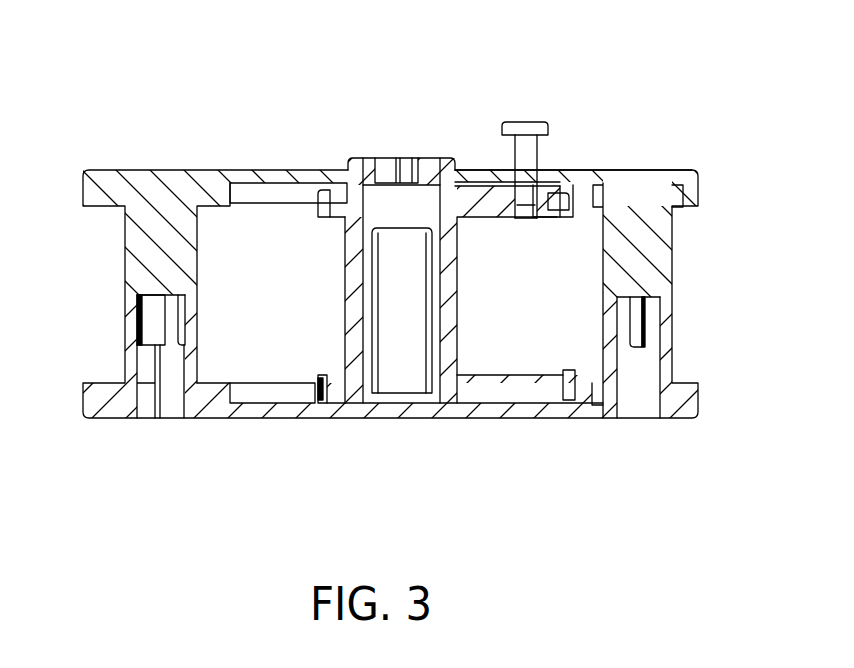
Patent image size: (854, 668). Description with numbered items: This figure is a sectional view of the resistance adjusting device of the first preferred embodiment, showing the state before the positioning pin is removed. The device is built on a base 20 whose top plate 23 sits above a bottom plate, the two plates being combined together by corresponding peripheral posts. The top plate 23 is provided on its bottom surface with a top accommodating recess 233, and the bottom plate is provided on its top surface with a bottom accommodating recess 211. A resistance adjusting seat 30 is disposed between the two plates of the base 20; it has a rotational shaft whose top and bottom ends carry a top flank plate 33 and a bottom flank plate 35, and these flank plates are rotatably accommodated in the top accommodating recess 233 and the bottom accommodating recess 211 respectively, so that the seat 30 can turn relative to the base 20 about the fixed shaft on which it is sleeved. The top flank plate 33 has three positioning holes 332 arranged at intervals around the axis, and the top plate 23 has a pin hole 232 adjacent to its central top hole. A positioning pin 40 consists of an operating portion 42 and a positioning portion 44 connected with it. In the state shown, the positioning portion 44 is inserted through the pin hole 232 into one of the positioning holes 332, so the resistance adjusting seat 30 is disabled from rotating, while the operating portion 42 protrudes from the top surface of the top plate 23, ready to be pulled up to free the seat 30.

The base 20 is at (95, 158).
The top plate 23 is at (678, 176).
The top accommodating recess 233 is at (246, 188).
The pin hole 232 is at (547, 181).
The top flank plate 33 is at (328, 198).
The positioning holes 332 is at (520, 218).
The resistance adjusting seat 30 is at (338, 323).
The bottom flank plate 35 is at (340, 388).
The bottom accommodating recess 211 is at (280, 398).
The positioning pin 40 is at (511, 112).
The operating portion 42 is at (533, 122).
The positioning portion 44 is at (523, 213).